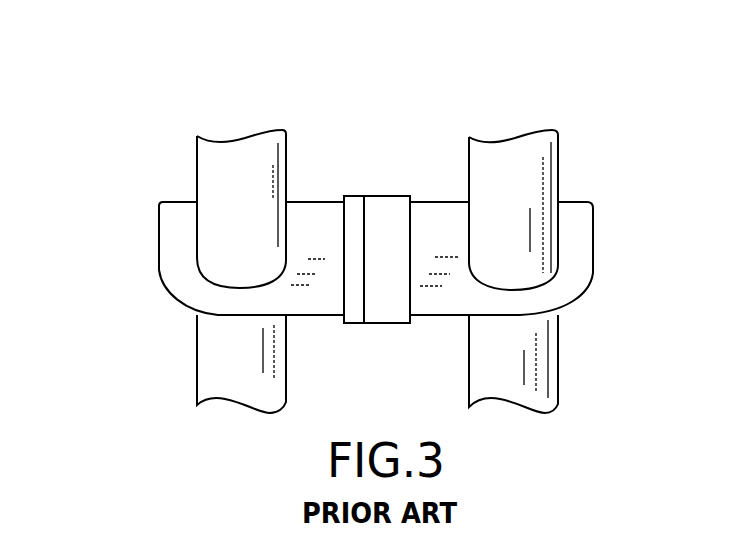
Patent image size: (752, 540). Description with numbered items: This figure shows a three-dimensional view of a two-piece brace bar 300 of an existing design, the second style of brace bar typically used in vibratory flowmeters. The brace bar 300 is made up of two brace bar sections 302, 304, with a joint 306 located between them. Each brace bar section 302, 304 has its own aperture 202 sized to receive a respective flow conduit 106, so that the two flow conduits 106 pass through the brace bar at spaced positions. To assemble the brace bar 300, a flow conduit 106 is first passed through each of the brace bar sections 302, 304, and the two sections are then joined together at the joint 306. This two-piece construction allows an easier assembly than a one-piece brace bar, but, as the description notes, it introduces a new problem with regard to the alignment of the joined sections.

The two-piece brace bar 300 is at (137, 73).
The flow conduit 106 is at (251, 148).
The aperture 202 is at (197, 262).
The brace bar section 302 is at (193, 285).
The brace bar section 304 is at (570, 282).
The joint 306 is at (376, 208).